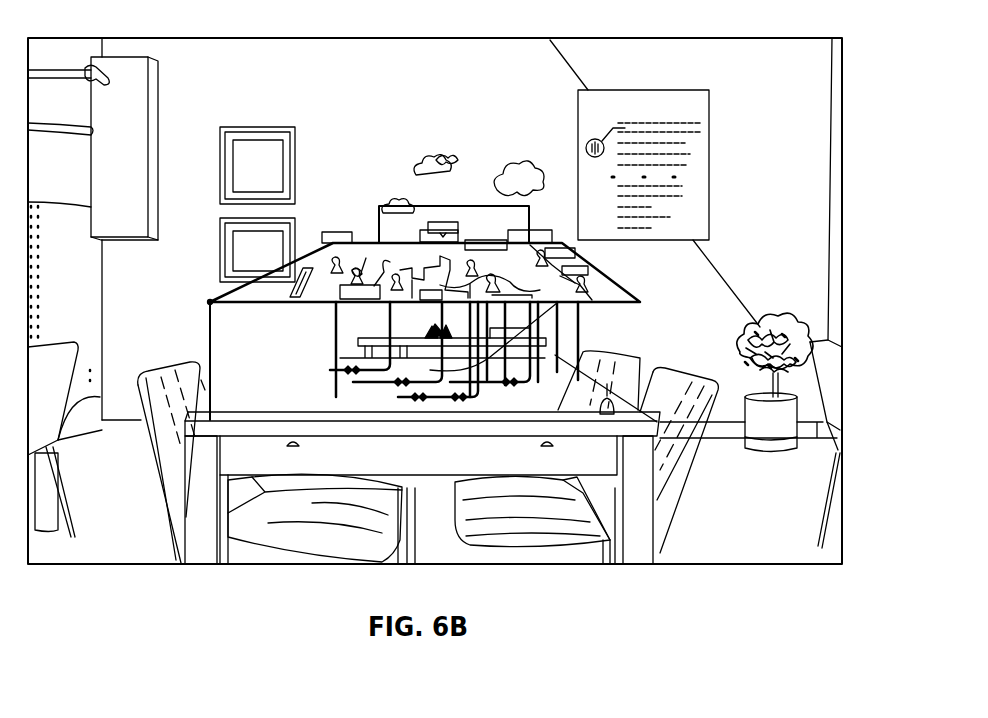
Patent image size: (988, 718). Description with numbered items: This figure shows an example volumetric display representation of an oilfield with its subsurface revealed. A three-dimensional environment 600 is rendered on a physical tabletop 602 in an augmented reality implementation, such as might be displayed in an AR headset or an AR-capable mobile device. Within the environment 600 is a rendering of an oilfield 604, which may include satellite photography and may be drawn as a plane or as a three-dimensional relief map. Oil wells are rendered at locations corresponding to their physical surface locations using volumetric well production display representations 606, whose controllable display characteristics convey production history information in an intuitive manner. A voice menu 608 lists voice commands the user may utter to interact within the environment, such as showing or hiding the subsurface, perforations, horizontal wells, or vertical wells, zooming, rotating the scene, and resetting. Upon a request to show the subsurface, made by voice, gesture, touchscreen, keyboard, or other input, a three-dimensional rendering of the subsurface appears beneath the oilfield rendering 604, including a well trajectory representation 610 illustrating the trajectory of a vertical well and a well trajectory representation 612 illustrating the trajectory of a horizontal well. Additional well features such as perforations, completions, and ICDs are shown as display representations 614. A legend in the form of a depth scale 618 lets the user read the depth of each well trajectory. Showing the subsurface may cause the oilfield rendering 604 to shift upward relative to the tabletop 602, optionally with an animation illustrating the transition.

The three-dimensional environment 600 is at (101, 14).
The physical tabletop 602 is at (362, 243).
The oilfield 604 is at (313, 373).
The volumetric well production display representation 606 is at (433, 222).
The voice menu 608 is at (709, 163).
The well trajectory representation 610 is at (343, 387).
The well trajectory representation 612 is at (580, 285).
The display representations 614 is at (517, 377).
The depth scale 618 is at (210, 318).